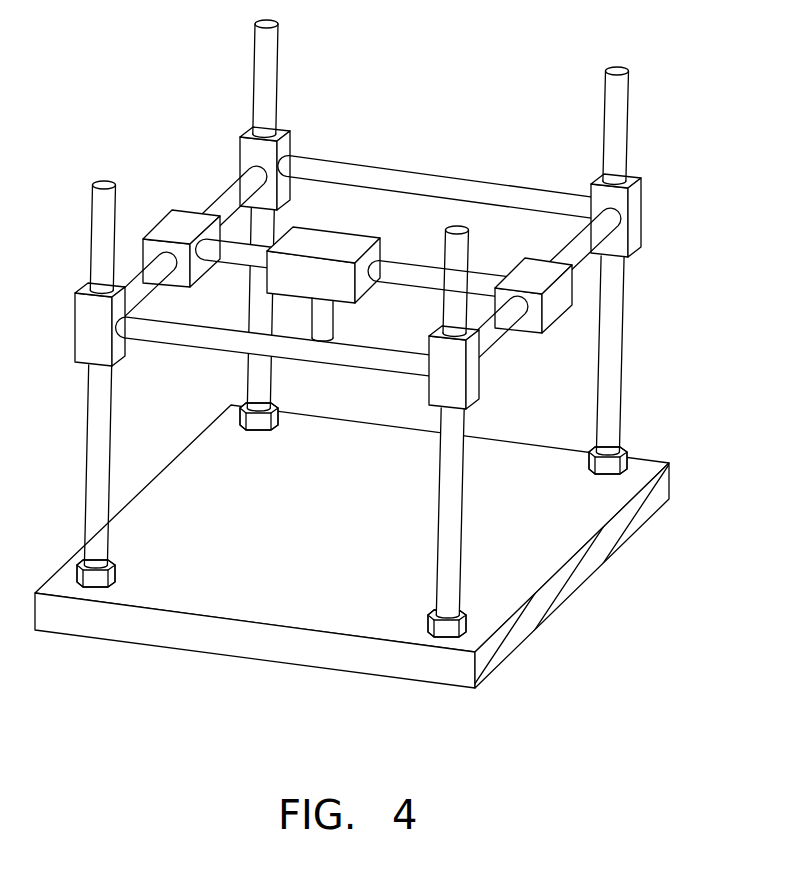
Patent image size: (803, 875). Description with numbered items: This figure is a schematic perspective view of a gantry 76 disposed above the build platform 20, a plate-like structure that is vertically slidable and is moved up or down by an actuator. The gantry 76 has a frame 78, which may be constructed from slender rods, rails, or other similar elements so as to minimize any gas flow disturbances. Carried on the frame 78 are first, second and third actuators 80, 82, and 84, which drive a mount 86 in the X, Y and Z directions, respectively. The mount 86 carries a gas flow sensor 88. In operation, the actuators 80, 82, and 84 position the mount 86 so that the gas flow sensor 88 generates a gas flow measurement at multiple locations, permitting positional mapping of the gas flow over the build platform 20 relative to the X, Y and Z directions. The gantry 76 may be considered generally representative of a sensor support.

The build platform 20 is at (583, 561).
The gantry 76 is at (382, 328).
The frame 78 is at (622, 348).
The first actuator 80 is at (332, 244).
The second actuator 82 is at (178, 220).
The third actuator 84 is at (98, 332).
The mount 86 is at (335, 313).
The gas flow sensor 88 is at (323, 341).